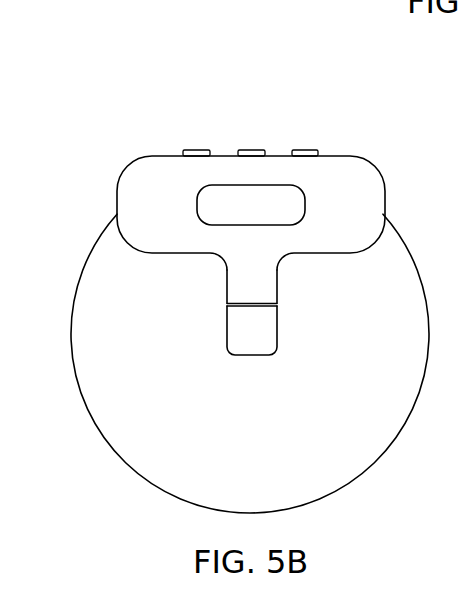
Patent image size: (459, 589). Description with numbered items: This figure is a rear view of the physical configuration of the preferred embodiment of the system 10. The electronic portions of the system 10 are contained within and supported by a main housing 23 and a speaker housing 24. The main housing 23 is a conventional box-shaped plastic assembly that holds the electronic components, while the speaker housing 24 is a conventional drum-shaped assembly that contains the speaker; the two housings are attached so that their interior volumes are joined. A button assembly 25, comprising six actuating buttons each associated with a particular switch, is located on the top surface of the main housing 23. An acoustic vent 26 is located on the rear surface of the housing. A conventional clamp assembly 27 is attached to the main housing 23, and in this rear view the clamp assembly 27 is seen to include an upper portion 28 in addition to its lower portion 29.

The system 10 is at (225, 256).
The main housing 23 is at (358, 220).
The speaker housing 24 is at (337, 445).
The button assembly 25 is at (242, 140).
The acoustic vent 26 is at (215, 207).
The clamp assembly 27 is at (297, 318).
The upper portion 28 is at (235, 283).
The lower portion 29 is at (235, 338).